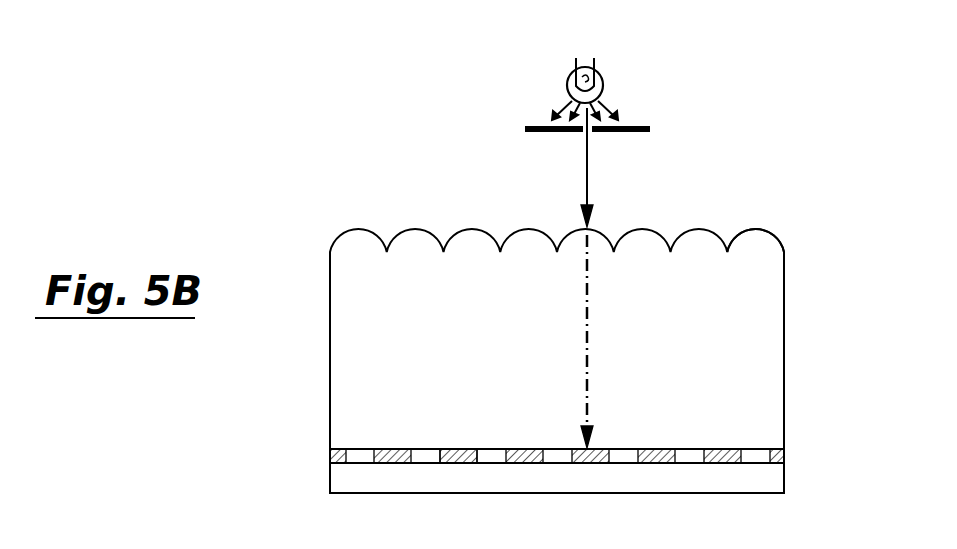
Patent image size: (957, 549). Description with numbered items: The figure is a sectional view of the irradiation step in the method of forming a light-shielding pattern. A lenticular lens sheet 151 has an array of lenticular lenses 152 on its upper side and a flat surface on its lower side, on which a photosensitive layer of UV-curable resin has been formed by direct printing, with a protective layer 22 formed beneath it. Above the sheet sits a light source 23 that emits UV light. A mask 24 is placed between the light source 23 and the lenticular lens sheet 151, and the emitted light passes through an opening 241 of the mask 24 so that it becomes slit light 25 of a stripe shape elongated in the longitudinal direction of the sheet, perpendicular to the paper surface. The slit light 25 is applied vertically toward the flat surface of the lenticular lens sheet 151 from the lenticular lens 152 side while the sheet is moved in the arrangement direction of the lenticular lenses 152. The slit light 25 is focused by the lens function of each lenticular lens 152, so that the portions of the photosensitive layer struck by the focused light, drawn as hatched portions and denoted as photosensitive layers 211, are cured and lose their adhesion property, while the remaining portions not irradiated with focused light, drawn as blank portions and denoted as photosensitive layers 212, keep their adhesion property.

The light source 23 is at (600, 78).
The mask 24 is at (650, 125).
The opening 241 is at (592, 131).
The slit light 25 is at (585, 170).
The lenticular lens sheet 151 is at (793, 448).
The lenticular lens 152 is at (753, 243).
The protective layer 22 is at (438, 482).
The photosensitive layer 211 is at (668, 462).
The photosensitive layer 212 is at (492, 460).